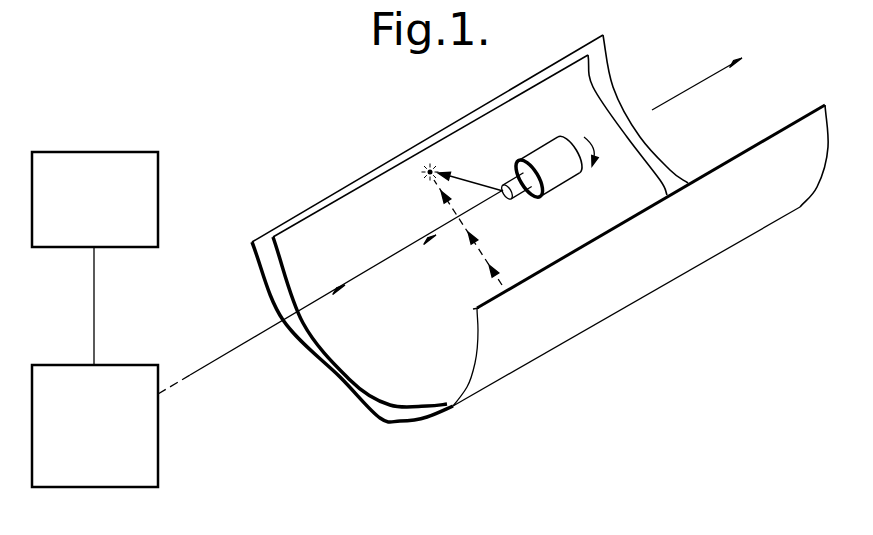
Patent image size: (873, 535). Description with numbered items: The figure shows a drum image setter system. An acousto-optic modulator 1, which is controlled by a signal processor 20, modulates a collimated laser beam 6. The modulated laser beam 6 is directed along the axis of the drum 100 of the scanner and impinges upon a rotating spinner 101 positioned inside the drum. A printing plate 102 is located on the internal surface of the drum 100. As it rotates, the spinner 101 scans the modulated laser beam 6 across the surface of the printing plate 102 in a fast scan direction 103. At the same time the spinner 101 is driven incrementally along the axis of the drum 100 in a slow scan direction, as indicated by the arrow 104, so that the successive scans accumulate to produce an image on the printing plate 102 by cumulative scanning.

The acousto-optic modulator 1 is at (86, 437).
The signal processor 20 is at (79, 216).
The collimated laser beam 6 is at (247, 348).
The drum 100 is at (315, 205).
The rotating spinner 101 is at (563, 177).
The printing plate 102 is at (402, 177).
The fast scan direction 103 is at (472, 252).
The arrow indicating slow scan direction 104 is at (695, 82).